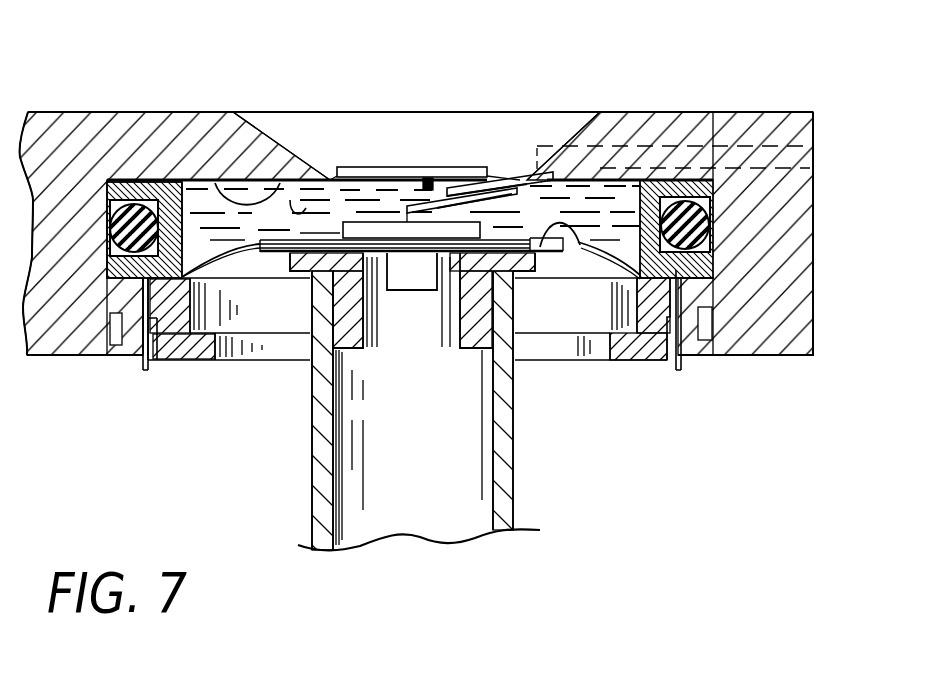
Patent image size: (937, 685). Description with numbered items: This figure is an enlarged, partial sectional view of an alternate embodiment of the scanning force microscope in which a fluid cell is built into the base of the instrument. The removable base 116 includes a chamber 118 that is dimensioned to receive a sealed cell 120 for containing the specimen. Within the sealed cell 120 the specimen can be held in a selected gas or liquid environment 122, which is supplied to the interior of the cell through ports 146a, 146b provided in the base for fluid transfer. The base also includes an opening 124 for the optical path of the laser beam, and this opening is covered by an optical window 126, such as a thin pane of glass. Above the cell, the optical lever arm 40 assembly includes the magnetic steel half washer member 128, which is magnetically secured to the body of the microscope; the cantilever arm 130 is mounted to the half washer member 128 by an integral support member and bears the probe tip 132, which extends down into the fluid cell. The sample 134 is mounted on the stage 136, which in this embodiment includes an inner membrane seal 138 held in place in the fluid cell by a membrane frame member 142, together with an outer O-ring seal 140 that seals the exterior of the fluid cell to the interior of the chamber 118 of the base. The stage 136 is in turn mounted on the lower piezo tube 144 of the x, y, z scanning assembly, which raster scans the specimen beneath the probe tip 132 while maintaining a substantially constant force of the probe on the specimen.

The optical lever arm 40 is at (428, 180).
The removable base 116 is at (667, 112).
The chamber 118 is at (710, 297).
The sealed cell 120 is at (238, 237).
The gas or liquid environment 122 is at (290, 200).
The opening 124 is at (350, 167).
The optical window 126 is at (457, 167).
The magnetic steel half washer member 128 is at (508, 178).
The cantilever arm 130 is at (455, 200).
The probe tip 132 is at (415, 200).
The sample 134 is at (340, 228).
The stage 136 is at (555, 222).
The inner membrane seal 138 is at (250, 255).
The outer O-ring seal 140 is at (693, 226).
The membrane frame member 142 is at (180, 363).
The lower piezo tube 144 is at (517, 480).
The port 146a is at (532, 170).
The port 146b is at (792, 172).